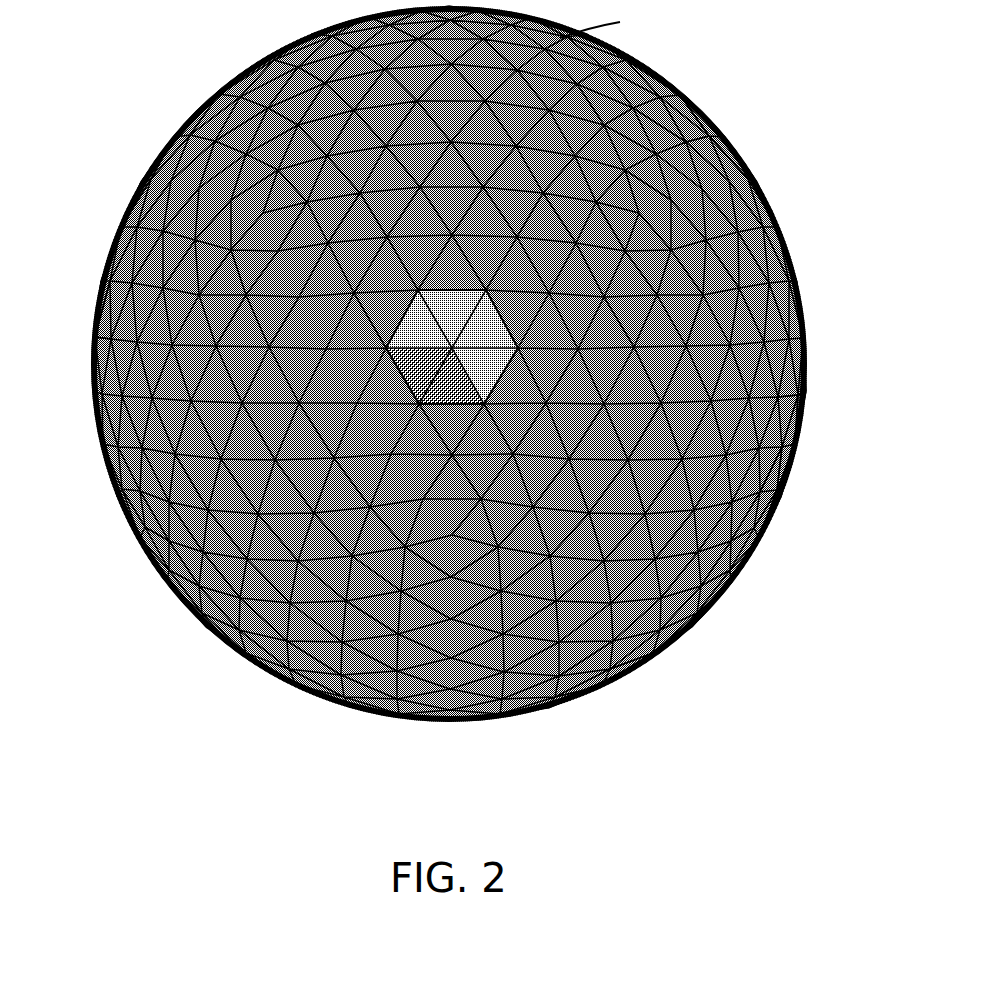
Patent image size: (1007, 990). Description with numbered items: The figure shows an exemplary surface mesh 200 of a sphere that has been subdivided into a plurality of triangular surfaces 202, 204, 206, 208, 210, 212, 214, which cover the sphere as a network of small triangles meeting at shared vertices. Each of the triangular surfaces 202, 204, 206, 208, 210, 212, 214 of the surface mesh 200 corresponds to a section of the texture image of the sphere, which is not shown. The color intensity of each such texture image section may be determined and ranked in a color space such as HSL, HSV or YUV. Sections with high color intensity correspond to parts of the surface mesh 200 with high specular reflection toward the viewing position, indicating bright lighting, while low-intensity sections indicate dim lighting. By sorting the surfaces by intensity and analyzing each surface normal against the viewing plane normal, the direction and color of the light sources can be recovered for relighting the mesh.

The surface mesh 200 is at (462, 844).
The triangular surface 202 is at (592, 33).
The triangular surface 204 is at (703, 113).
The triangular surface 206 is at (802, 420).
The triangular surface 208 is at (783, 486).
The triangular surface 210 is at (618, 680).
The triangular surface 212 is at (92, 316).
The triangular surface 214 is at (143, 172).